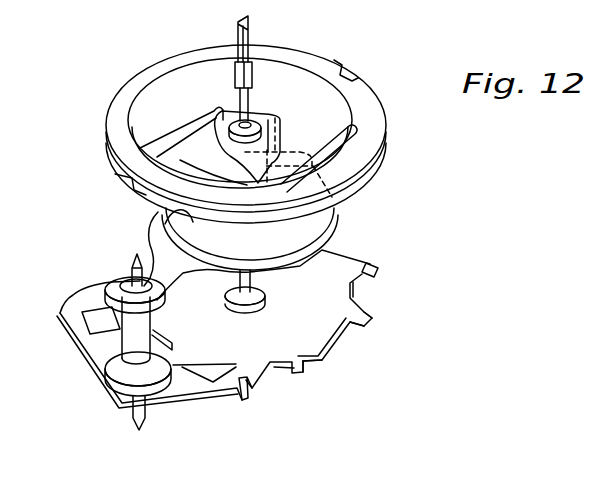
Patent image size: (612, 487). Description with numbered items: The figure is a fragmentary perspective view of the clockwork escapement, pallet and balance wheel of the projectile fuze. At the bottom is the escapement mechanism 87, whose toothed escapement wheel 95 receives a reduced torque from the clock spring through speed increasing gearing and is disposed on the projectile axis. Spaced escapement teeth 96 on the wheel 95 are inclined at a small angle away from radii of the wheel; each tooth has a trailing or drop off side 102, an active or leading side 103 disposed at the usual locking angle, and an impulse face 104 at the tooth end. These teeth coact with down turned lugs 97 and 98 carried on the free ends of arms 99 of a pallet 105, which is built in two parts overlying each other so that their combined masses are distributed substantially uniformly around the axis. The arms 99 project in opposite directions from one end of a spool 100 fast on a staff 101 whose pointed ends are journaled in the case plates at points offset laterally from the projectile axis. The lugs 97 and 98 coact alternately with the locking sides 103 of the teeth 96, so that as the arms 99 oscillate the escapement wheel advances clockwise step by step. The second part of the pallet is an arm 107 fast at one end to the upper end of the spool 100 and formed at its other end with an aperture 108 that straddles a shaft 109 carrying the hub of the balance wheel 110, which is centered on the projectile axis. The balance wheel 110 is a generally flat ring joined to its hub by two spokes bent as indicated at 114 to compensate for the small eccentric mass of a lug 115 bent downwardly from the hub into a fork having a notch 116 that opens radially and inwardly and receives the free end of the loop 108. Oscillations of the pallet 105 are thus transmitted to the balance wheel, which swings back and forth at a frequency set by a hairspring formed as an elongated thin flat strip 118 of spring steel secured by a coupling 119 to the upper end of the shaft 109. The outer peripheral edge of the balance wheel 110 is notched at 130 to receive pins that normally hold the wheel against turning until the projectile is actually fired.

The escapement mechanism 87 is at (386, 245).
The escapement wheel 95 is at (348, 306).
The escapement teeth 96 is at (366, 322).
The down turned lug 97 is at (241, 398).
The down turned lug 98 is at (112, 322).
The arms 99 is at (70, 318).
The spool 100 is at (152, 322).
The staff 101 is at (133, 418).
The trailing or drop off side 102 is at (326, 362).
The active or leading side 103 is at (352, 328).
The impulse face 104 is at (378, 268).
The pallet 105 is at (96, 263).
The arm 107 is at (150, 228).
The aperture 108 is at (275, 259).
The shaft 109 is at (256, 284).
The balance wheel 110 is at (383, 126).
The bent spokes 114 is at (220, 100).
The lug 115 is at (282, 138).
The notch 116 is at (302, 163).
The hairspring strip 118 is at (238, 30).
The coupling 119 is at (253, 80).
The notch 130 is at (352, 80).